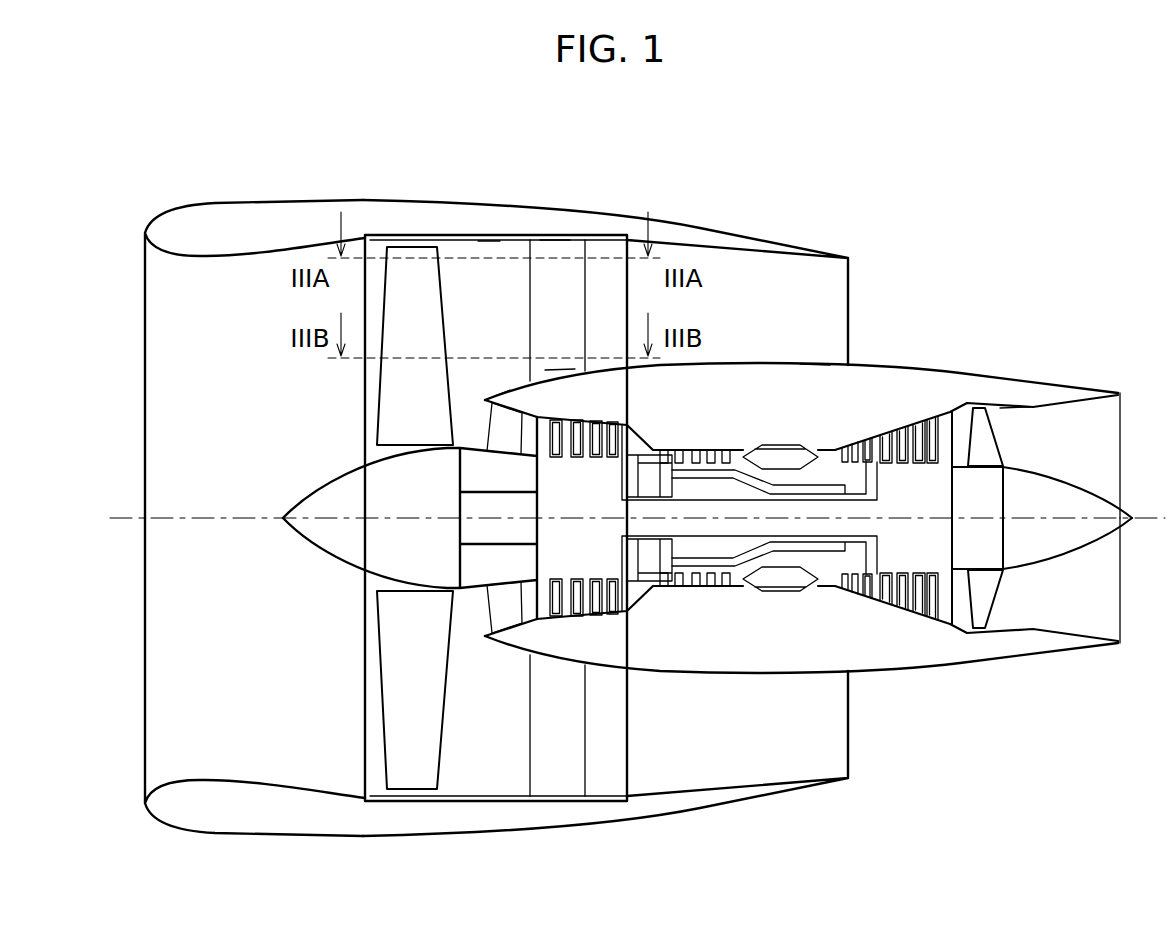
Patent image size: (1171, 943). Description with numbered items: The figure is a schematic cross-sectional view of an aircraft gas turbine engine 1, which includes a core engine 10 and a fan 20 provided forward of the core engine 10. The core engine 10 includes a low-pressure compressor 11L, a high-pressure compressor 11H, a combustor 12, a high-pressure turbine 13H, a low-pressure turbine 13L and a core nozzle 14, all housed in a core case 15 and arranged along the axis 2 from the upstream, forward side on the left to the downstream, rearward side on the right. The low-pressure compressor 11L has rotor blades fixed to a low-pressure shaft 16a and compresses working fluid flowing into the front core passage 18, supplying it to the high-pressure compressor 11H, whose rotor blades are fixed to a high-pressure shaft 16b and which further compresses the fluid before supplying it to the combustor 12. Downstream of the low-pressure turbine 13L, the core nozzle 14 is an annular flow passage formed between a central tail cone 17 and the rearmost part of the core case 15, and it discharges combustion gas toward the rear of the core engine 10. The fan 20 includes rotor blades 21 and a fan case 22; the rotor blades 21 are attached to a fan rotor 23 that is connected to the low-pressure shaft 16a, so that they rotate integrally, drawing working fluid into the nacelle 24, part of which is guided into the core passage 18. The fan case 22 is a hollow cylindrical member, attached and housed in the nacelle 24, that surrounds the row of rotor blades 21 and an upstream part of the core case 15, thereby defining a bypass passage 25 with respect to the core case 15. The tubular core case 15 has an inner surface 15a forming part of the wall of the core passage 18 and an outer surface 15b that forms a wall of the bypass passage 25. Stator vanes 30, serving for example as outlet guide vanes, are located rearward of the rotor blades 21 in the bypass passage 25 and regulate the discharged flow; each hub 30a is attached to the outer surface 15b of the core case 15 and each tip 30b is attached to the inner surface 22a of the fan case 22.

The engine 1 is at (975, 231).
The axis 2 is at (206, 515).
The core engine 10 is at (838, 423).
The low-pressure compressor 11L is at (590, 613).
The high-pressure compressor 11H is at (683, 588).
The combustor 12 is at (782, 595).
The high-pressure turbine 13H is at (857, 600).
The low-pressure turbine 13L is at (910, 617).
The core nozzle 14 is at (1030, 642).
The core case 15 is at (738, 363).
The inner surface 15a is at (487, 405).
The outer surface 15b is at (818, 363).
The low-pressure shaft 16a is at (705, 498).
The high-pressure shaft 16b is at (783, 490).
The tail cone 17 is at (1048, 472).
The core passage 18 is at (420, 650).
The fan 20 is at (378, 235).
The rotor blades 21 is at (377, 422).
The fan case 22 is at (432, 236).
The inner surface 22a is at (485, 245).
The fan rotor 23 is at (390, 581).
The nacelle 24 is at (213, 209).
The bypass passage 25 is at (730, 282).
The stator vanes 30 is at (558, 286).
The hub 30a is at (560, 367).
The tip 30b is at (553, 240).